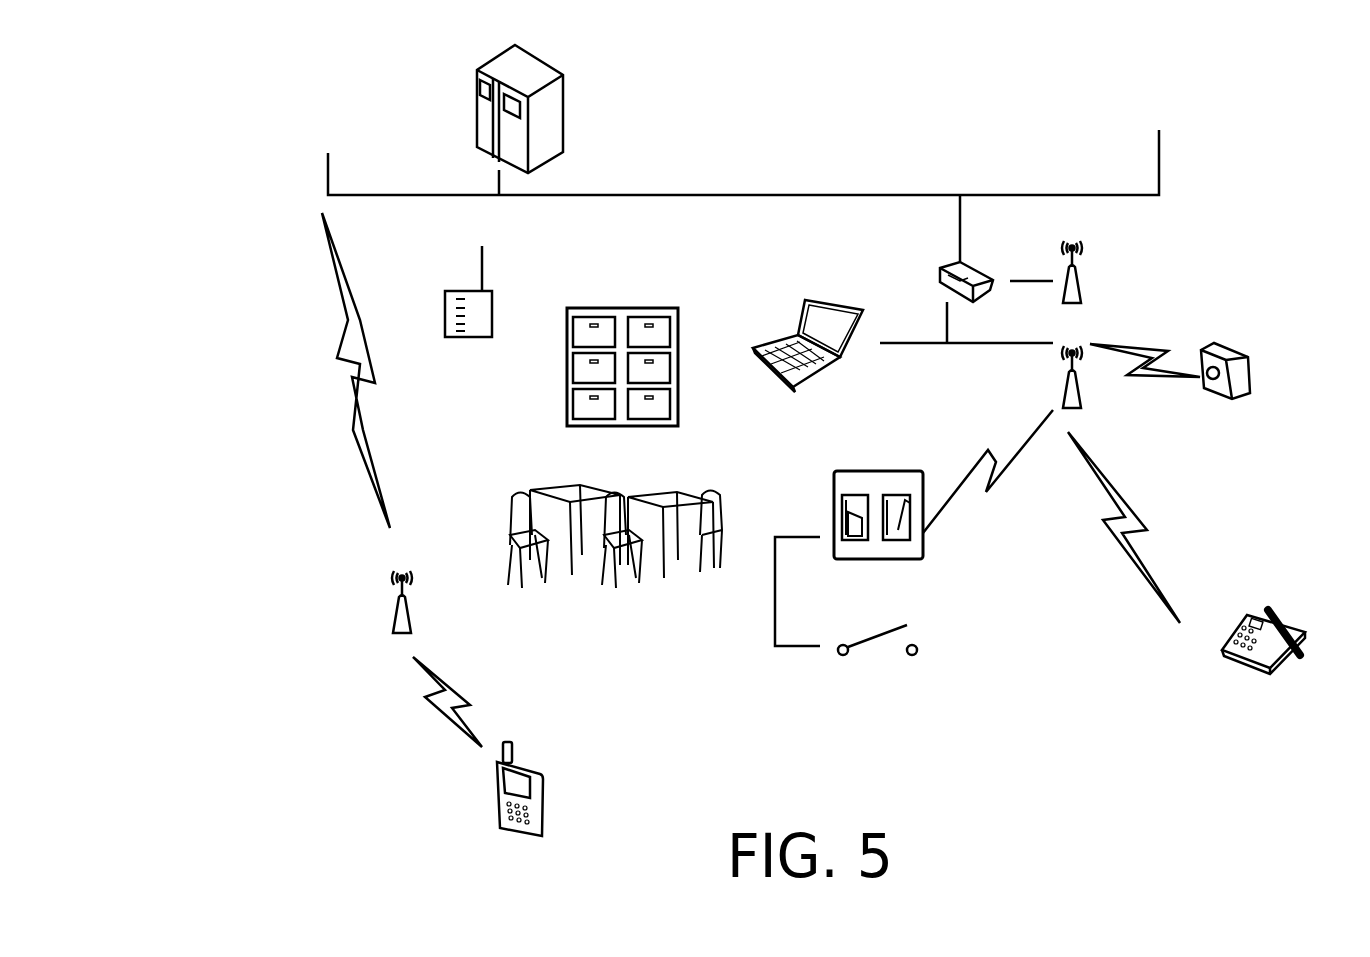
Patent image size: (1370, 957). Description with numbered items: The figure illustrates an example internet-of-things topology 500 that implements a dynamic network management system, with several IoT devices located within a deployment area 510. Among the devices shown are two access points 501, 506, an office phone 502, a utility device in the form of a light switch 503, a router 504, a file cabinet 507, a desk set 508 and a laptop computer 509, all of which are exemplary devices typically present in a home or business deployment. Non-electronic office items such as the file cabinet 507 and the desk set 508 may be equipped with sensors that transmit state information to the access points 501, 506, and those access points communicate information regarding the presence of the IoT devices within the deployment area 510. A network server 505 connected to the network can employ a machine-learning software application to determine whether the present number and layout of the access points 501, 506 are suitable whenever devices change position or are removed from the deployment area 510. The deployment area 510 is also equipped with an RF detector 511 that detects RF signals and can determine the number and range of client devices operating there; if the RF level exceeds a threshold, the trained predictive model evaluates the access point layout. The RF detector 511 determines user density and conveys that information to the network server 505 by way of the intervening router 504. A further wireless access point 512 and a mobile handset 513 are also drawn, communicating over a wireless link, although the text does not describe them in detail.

The internet-of-things topology 500 is at (205, 100).
The access point 501 is at (1082, 292).
The office phone 502 is at (1250, 613).
The light switch 503 is at (893, 560).
The router 504 is at (940, 268).
The network server 505 is at (566, 122).
The access point 506 is at (1080, 390).
The file cabinet 507 is at (620, 307).
The desk set 508 is at (526, 474).
The laptop computer 509 is at (830, 367).
The deployment area 510 is at (755, 250).
The RF detector 511 is at (434, 270).
The wireless access point 512 is at (395, 618).
The mobile phone 513 is at (498, 790).